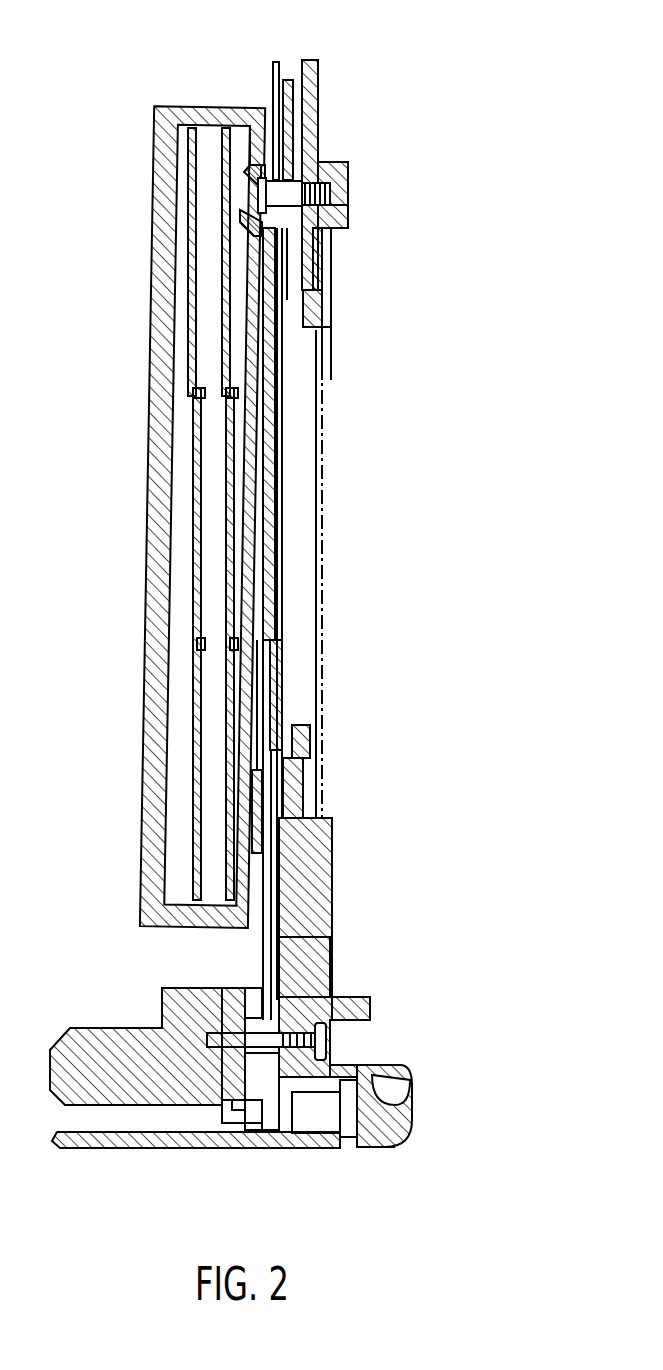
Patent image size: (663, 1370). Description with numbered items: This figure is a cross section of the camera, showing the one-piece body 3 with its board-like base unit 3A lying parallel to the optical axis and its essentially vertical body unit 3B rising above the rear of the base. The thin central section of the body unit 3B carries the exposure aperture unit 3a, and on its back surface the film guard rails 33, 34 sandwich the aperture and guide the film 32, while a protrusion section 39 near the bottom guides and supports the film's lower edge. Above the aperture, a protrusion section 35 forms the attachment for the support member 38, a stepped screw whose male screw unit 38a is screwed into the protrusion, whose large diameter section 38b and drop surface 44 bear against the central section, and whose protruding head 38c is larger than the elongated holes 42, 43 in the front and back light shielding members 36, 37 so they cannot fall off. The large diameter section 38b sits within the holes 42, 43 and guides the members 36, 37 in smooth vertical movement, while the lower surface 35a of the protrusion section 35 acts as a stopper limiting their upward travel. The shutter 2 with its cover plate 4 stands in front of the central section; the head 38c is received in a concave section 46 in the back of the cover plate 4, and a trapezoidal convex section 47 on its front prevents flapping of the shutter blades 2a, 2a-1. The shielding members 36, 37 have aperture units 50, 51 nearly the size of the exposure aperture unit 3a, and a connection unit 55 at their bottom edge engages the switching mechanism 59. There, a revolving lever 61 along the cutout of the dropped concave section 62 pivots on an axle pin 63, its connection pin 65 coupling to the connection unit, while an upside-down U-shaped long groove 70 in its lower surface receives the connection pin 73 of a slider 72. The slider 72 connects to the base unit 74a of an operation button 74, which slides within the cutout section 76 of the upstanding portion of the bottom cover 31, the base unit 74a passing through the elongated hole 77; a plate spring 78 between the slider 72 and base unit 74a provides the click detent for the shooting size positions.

The shutter 2 is at (140, 164).
The shutter blades 2a is at (232, 672).
The shutter blade 2a-1 is at (222, 340).
The body 3 is at (345, 897).
The base unit 3A is at (85, 1028).
The body unit 3B is at (318, 102).
The exposure aperture unit 3a is at (320, 333).
The cover plate 4 is at (251, 90).
The bottom cover 31 is at (133, 1148).
The film 32 is at (322, 655).
The film guard rail 33 is at (322, 312).
The film guard rail 34 is at (305, 742).
The protrusion section 35 is at (348, 185).
The lower surface 35a is at (331, 240).
The front light shielding member 36 is at (285, 82).
The back light shielding member 37 is at (276, 62).
The support member 38 is at (249, 190).
The male screw unit 38a is at (330, 176).
The large diameter section 38b is at (291, 150).
The protruding head 38c is at (255, 222).
The protrusion section 39 is at (325, 818).
The elongated hole 42 is at (262, 225).
The elongated hole 43 is at (303, 140).
The drop surface 44 is at (348, 218).
The concave section 46 is at (258, 165).
The convex section 47 is at (228, 145).
The aperture unit 50 is at (262, 412).
The aperture unit 51 is at (278, 645).
The connection unit 55 is at (320, 937).
The switching mechanism 59 is at (262, 1130).
The revolving lever 61 is at (222, 1080).
The dropped concave section 62 is at (268, 1065).
The axle pin 63 is at (330, 1040).
The connection pin 65 is at (255, 995).
The long groove 70 is at (230, 1123).
The slider 72 is at (315, 1135).
The connection pin 73 is at (250, 1135).
The operation button 74 is at (412, 1108).
The base unit 74a is at (362, 1135).
The cutout section 76 is at (385, 1145).
The elongated hole 77 is at (388, 1098).
The plate spring 78 is at (352, 1075).